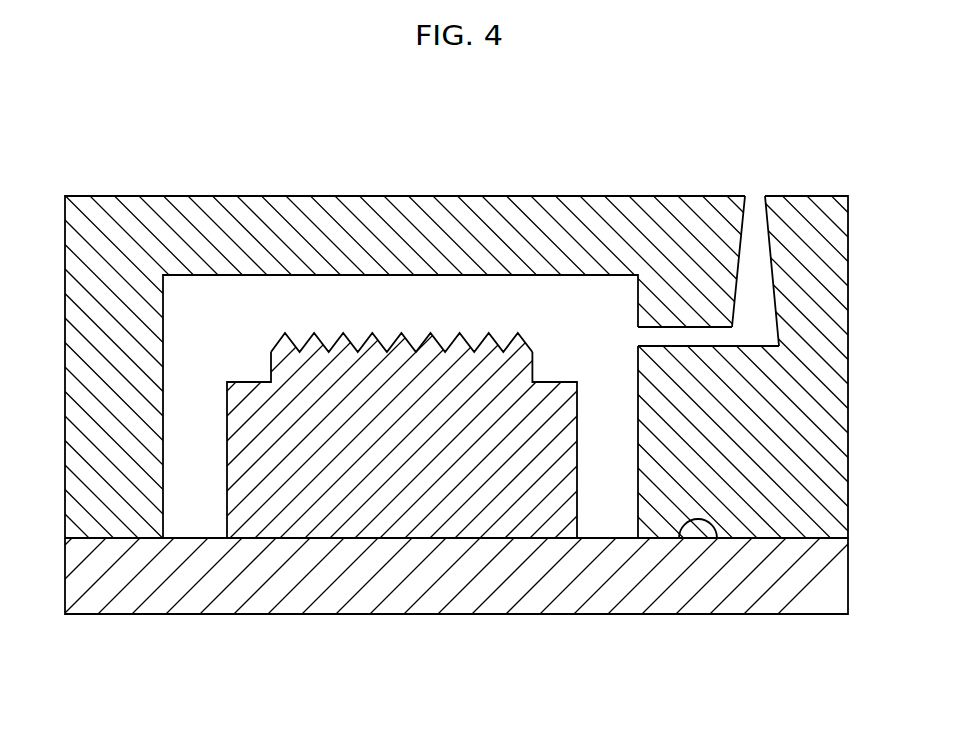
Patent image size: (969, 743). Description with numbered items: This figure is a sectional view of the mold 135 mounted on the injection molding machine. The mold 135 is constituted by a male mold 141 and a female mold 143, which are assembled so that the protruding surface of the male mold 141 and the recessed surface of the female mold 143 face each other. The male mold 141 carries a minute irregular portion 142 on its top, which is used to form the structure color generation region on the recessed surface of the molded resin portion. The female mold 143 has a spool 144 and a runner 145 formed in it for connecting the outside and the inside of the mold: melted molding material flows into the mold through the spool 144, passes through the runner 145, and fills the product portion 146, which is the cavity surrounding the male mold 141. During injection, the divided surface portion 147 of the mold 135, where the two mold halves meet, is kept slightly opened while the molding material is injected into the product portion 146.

The mold 135 is at (727, 132).
The male mold 141 is at (387, 512).
The minute irregular portion 142 is at (327, 335).
The female mold 143 is at (423, 245).
The spool 144 is at (755, 205).
The runner 145 is at (737, 338).
The product portion 146 is at (472, 302).
The divided surface portion 147 is at (717, 541).